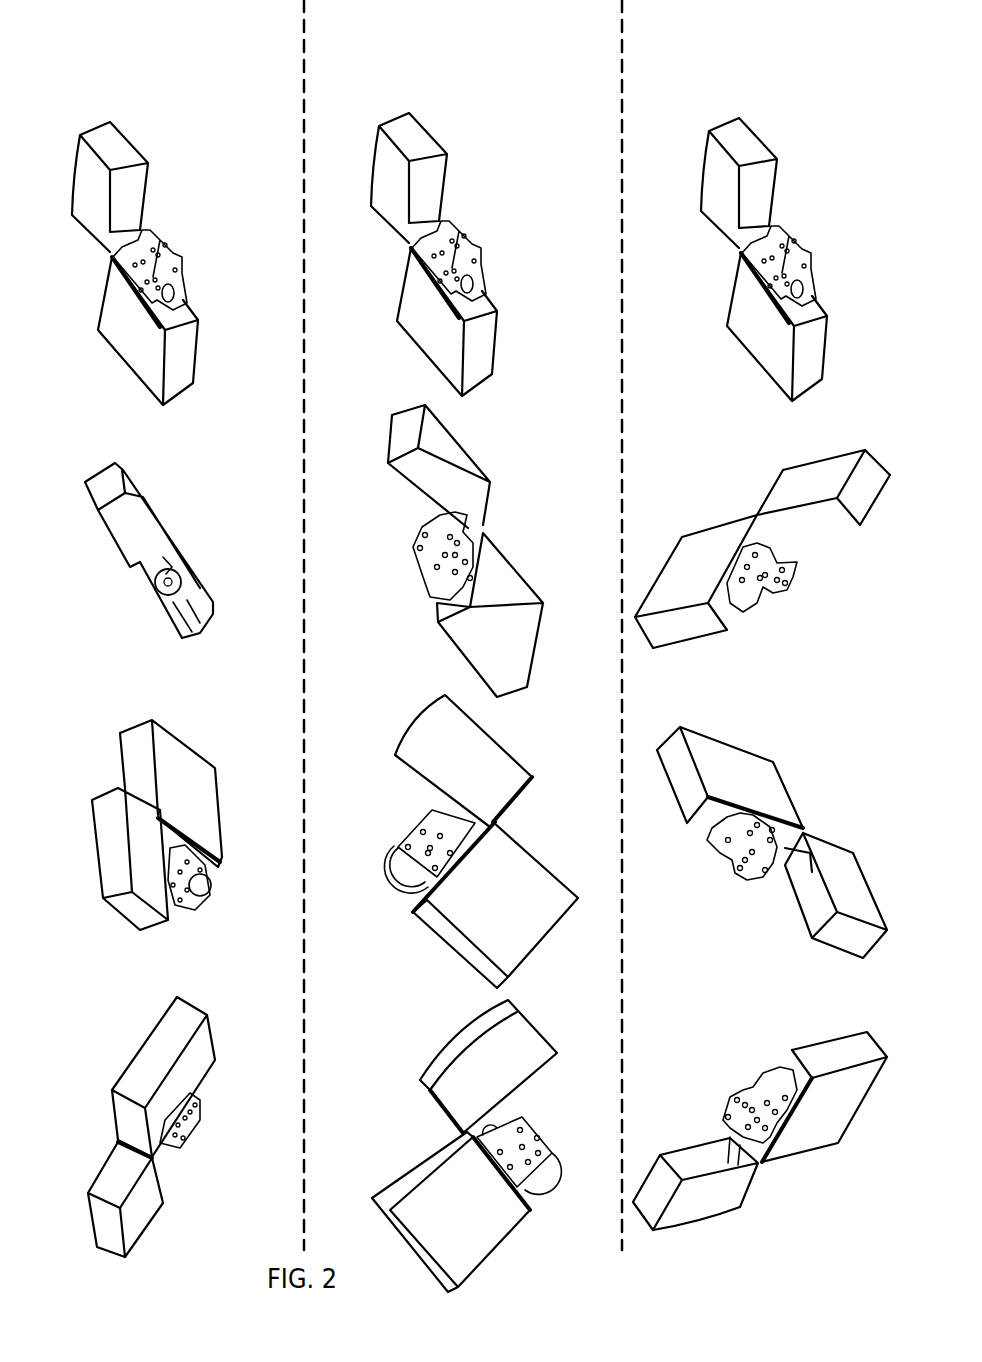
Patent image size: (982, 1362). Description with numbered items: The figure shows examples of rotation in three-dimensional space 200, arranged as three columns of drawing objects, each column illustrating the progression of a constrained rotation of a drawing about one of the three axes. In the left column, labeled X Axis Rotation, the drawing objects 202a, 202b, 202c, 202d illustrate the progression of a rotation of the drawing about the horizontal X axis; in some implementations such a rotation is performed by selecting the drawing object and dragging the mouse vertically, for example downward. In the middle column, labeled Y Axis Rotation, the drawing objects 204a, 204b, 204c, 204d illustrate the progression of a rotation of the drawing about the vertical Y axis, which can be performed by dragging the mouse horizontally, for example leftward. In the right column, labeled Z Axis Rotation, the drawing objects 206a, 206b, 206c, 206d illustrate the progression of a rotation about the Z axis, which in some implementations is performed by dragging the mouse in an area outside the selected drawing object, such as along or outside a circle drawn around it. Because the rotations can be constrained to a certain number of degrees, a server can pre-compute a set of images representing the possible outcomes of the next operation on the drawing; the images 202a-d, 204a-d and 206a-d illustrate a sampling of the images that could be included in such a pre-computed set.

The examples of rotation in three-dimensional space 200 is at (88, 46).
The drawing object 202a is at (190, 372).
The drawing object 202b is at (178, 540).
The drawing object 202c is at (196, 750).
The drawing object 202d is at (138, 1050).
The drawing object 204a is at (493, 347).
The drawing object 204b is at (518, 566).
The drawing object 204c is at (541, 862).
The drawing object 204d is at (420, 1152).
The drawing object 206a is at (750, 358).
The drawing object 206b is at (702, 531).
The drawing object 206c is at (730, 747).
The drawing object 206d is at (757, 1175).